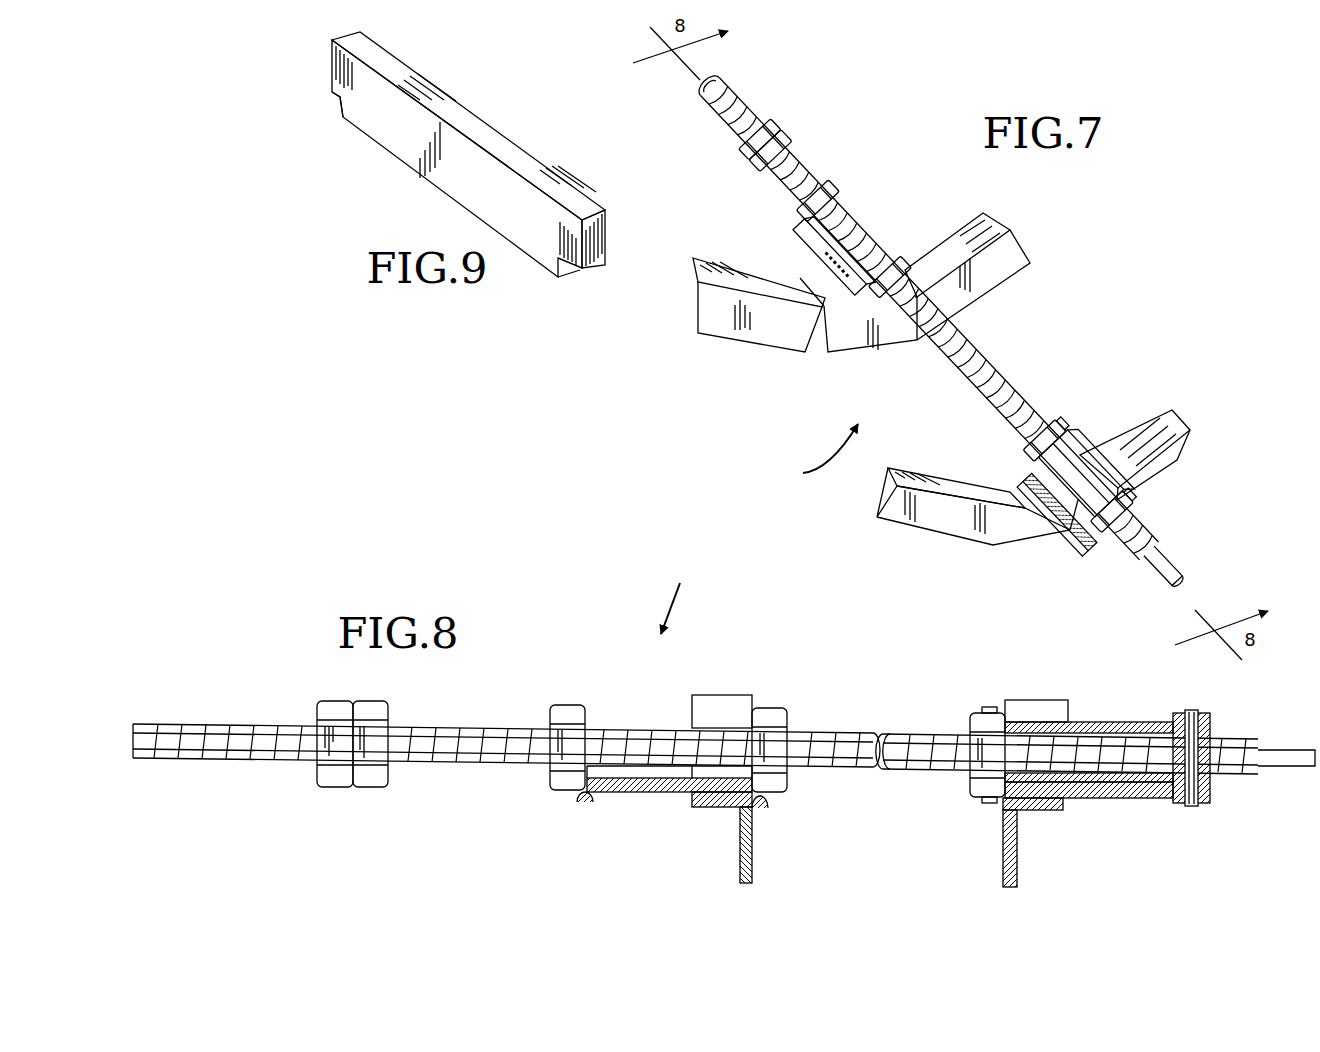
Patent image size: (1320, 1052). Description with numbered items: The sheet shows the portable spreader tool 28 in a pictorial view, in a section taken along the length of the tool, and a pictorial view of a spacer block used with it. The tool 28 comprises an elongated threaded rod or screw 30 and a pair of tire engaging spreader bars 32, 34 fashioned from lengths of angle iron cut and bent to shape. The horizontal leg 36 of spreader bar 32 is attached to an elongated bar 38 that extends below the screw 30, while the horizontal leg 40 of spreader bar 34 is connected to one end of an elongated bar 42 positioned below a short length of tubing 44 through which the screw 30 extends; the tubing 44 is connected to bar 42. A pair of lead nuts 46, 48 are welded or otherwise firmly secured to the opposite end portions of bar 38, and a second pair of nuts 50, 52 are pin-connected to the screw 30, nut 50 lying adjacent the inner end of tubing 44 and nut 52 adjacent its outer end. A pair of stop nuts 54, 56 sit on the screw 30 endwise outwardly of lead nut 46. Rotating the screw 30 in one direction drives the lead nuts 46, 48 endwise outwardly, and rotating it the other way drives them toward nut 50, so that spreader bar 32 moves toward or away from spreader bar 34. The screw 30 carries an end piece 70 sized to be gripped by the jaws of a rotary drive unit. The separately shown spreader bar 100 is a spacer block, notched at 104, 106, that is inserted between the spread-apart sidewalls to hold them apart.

In FIG. 7, the tool 28 is at (759, 529).
In FIG. 7, the threaded rod or screw 30 is at (987, 363).
In FIG. 8, the threaded rod or screw 30 is at (847, 738).
In FIG. 7, the spreader bar 32 is at (762, 325).
In FIG. 8, the spreader bar 32 is at (757, 847).
In FIG. 7, the spreader bar 34 is at (957, 522).
In FIG. 8, the spreader bar 34 is at (1000, 833).
In FIG. 7, the horizontal leg 36 is at (703, 268).
In FIG. 8, the horizontal leg 36 is at (718, 807).
In FIG. 7, the elongated bar 38 is at (813, 245).
In FIG. 8, the elongated bar 38 is at (622, 790).
In FIG. 7, the horizontal leg 40 is at (922, 492).
In FIG. 8, the horizontal leg 40 is at (1053, 810).
In FIG. 7, the elongated bar 42 is at (1072, 530).
In FIG. 8, the elongated bar 42 is at (1133, 798).
In FIG. 7, the tubing 44 is at (1073, 462).
In FIG. 8, the tubing 44 is at (1120, 723).
In FIG. 7, the lead nut 46 is at (820, 185).
In FIG. 8, the lead nut 46 is at (563, 760).
In FIG. 7, the lead nut 48 is at (893, 257).
In FIG. 8, the lead nut 48 is at (773, 717).
In FIG. 7, the nut 50 is at (1035, 457).
In FIG. 8, the nut 50 is at (980, 718).
In FIG. 7, the nut 52 is at (1113, 540).
In FIG. 8, the nut 52 is at (1210, 720).
In FIG. 7, the stop nut 54 is at (738, 143).
In FIG. 8, the stop nut 54 is at (322, 789).
In FIG. 7, the stop nut 56 is at (787, 137).
In FIG. 8, the stop nut 56 is at (382, 789).
In FIG. 7, the end piece 70 is at (1175, 572).
In FIG. 8, the end piece 70 is at (1290, 767).
In FIG. 9, the spreader bar 100 is at (413, 143).
In FIG. 9, the notch 104 is at (335, 101).
In FIG. 9, the notch 106 is at (567, 278).